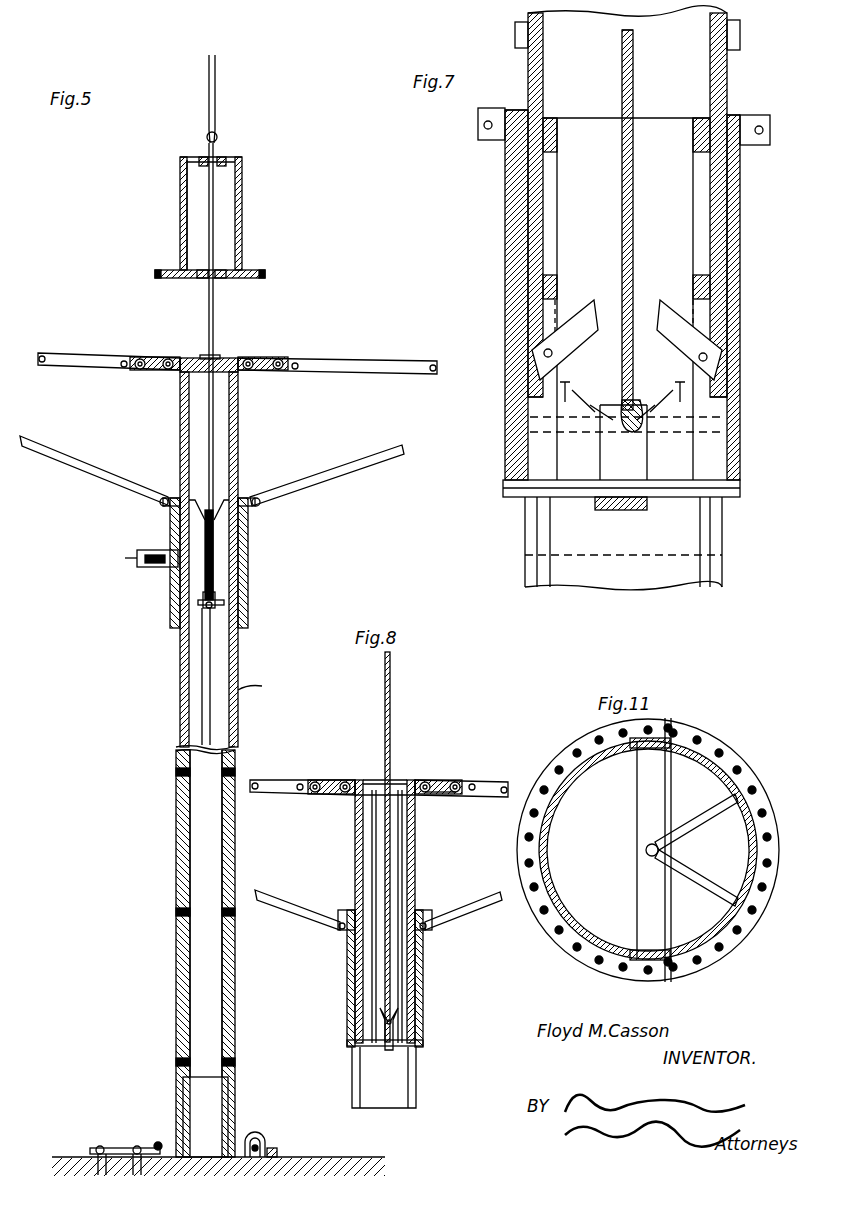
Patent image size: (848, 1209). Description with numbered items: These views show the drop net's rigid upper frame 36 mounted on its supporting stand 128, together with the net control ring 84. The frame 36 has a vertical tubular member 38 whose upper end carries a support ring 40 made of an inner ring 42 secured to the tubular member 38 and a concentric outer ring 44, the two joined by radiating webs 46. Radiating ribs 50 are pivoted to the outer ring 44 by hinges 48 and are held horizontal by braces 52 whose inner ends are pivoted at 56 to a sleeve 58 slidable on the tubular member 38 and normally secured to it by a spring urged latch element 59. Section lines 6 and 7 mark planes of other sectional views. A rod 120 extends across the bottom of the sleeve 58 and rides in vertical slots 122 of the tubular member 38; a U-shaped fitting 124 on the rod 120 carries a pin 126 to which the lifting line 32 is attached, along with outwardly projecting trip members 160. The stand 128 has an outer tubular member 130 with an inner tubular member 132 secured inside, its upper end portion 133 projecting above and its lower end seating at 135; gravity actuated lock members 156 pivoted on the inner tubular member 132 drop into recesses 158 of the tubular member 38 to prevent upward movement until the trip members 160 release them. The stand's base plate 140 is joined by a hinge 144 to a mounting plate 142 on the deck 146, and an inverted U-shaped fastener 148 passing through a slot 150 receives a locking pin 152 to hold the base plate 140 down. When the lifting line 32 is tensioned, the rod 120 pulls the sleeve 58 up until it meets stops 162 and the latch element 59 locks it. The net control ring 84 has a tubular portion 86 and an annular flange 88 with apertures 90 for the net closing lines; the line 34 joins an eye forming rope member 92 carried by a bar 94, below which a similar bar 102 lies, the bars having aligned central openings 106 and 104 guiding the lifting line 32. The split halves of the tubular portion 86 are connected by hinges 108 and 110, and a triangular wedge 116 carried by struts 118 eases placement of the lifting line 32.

In FIG. 5, the section line 6- 6 is at (160, 745).
In FIG. 5, the section line 7- 7 is at (160, 455).
In FIG. 5, the lifting line 32 is at (214, 318).
In FIG. 7, the lifting line 32 is at (634, 200).
In FIG. 8, the lifting line 32 is at (390, 680).
In FIG. 5, the line 34 is at (207, 88).
In FIG. 5, the rigid upper frame 36 is at (282, 347).
In FIG. 8, the rigid upper frame 36 is at (413, 768).
In FIG. 5, the tubular member 38 is at (240, 430).
In FIG. 7, the tubular member 38 is at (540, 92).
In FIG. 8, the tubular member 38 is at (416, 870).
In FIG. 8, the support ring 40 is at (458, 776).
In FIG. 5, the inner ring 42 is at (244, 372).
In FIG. 8, the inner ring 42 is at (425, 796).
In FIG. 5, the outer ring 44 is at (128, 372).
In FIG. 8, the outer ring 44 is at (460, 796).
In FIG. 5, the radiating webs 46 is at (153, 356).
In FIG. 8, the radiating webs 46 is at (320, 780).
In FIG. 8, the hinges 48 is at (474, 784).
In FIG. 5, the radiating ribs 50 is at (88, 356).
In FIG. 8, the radiating ribs 50 is at (278, 798).
In FIG. 5, the braces 52 is at (100, 476).
In FIG. 8, the braces 52 is at (287, 902).
In FIG. 7, the pivot connection 56 is at (480, 134).
In FIG. 8, the pivot connection 56 is at (430, 916).
In FIG. 5, the sleeve 58 is at (248, 602).
In FIG. 7, the sleeve 58 is at (510, 214).
In FIG. 8, the sleeve 58 is at (424, 968).
In FIG. 5, the spring urged latch element 59 is at (160, 568).
In FIG. 5, the net control ring 84 is at (244, 200).
In FIG. 5, the tubular portion 86 is at (180, 210).
In FIG. 11, the tubular portion 86 is at (555, 850).
In FIG. 5, the annular flange 88 is at (247, 270).
In FIG. 11, the annular flange 88 is at (768, 900).
In FIG. 11, the apertures 90 is at (740, 770).
In FIG. 5, the eye forming rope member 92 is at (206, 140).
In FIG. 5, the bar 94 is at (222, 156).
In FIG. 5, the bar 102 is at (198, 278).
In FIG. 11, the bar 102 is at (640, 770).
In FIG. 5, the central opening 104 is at (208, 280).
In FIG. 11, the central opening 104 is at (646, 856).
In FIG. 5, the central opening 106 is at (186, 162).
In FIG. 11, the hinge 108 is at (670, 740).
In FIG. 11, the hinge 110 is at (672, 948).
In FIG. 11, the triangular wedge 116 is at (673, 834).
In FIG. 11, the struts 118 is at (700, 876).
In FIG. 5, the rod 120 is at (198, 612).
In FIG. 7, the rod 120 is at (665, 500).
In FIG. 8, the rod 120 is at (410, 1050).
In FIG. 5, the vertical slots 122 is at (212, 640).
In FIG. 7, the vertical slots 122 is at (527, 510).
In FIG. 8, the vertical slots 122 is at (384, 1077).
In FIG. 5, the U-shaped fitting 124 is at (216, 612).
In FIG. 7, the U-shaped fitting 124 is at (640, 474).
In FIG. 8, the U-shaped fitting 124 is at (380, 1030).
In FIG. 7, the pin 126 is at (627, 434).
In FIG. 5, the supporting stand 128 is at (165, 1057).
In FIG. 5, the outer tubular member 130 is at (237, 990).
In FIG. 5, the inner tubular member 132 is at (178, 956).
In FIG. 7, the inner tubular member 132 is at (558, 214).
In FIG. 8, the inner tubular member 132 is at (387, 916).
In FIG. 5, the upper end portion 133 is at (188, 500).
In FIG. 5, the seat 135 is at (238, 692).
In FIG. 5, the base plate 140 is at (190, 1148).
In FIG. 5, the mounting plate 142 is at (94, 1148).
In FIG. 5, the hinge 144 is at (154, 1144).
In FIG. 5, the deck 146 is at (58, 1160).
In FIG. 5, the inverted U-shaped fastener 148 is at (255, 1134).
In FIG. 5, the slot 150 is at (268, 1150).
In FIG. 5, the locking pin 152 is at (272, 1148).
In FIG. 7, the gravity actuated lock members 156 is at (580, 318).
In FIG. 7, the recesses 158 is at (530, 352).
In FIG. 7, the trip members 160 is at (575, 388).
In FIG. 7, the stops 162 is at (740, 48).